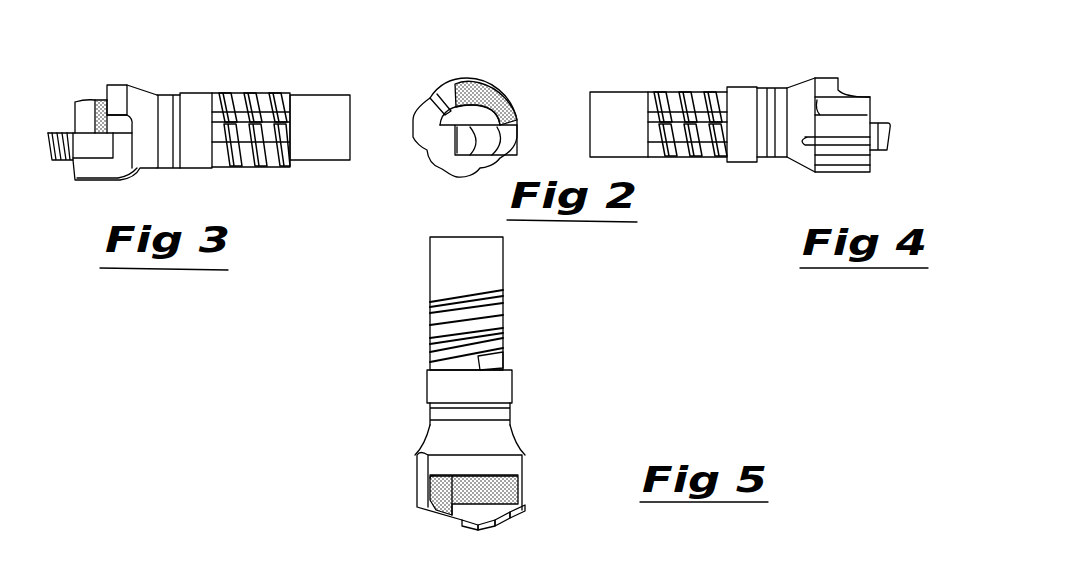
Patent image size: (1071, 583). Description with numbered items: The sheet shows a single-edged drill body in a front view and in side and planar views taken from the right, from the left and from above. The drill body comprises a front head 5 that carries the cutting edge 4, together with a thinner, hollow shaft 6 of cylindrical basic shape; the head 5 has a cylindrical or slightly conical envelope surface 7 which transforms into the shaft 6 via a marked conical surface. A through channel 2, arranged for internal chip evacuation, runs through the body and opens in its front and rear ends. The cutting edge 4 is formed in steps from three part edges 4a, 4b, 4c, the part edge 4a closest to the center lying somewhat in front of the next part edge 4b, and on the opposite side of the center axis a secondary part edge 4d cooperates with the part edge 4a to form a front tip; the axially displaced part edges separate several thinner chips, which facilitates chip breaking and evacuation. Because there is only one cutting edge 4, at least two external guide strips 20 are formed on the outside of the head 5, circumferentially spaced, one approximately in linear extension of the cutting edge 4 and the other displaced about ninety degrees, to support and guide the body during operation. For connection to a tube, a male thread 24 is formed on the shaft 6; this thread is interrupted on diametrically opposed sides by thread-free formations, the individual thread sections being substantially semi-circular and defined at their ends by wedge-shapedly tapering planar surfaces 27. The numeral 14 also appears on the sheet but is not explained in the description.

In FIG. 2, the through channel 2 is at (470, 112).
In FIG. 4, the cutting edge 4 is at (888, 122).
In FIG. 5, the part edge 4a is at (489, 530).
In FIG. 5, the part edge 4b is at (505, 525).
In FIG. 5, the part edge 4c is at (520, 515).
In FIG. 5, the secondary part edge 4d is at (470, 528).
In FIG. 4, the front head 5 is at (822, 78).
In FIG. 5, the front head 5 is at (405, 471).
In FIG. 5, the shaft 6 is at (425, 298).
In FIG. 3, the envelope surface 7 is at (117, 100).
In FIG. 2, the envelope surface 7 is at (455, 80).
In FIG. 5, the chip 14 is at (252, 582).
In FIG. 2, the guide strips 20 is at (413, 122).
In FIG. 4, the male thread 24 is at (685, 90).
In FIG. 4, the planar surfaces 27 is at (700, 145).